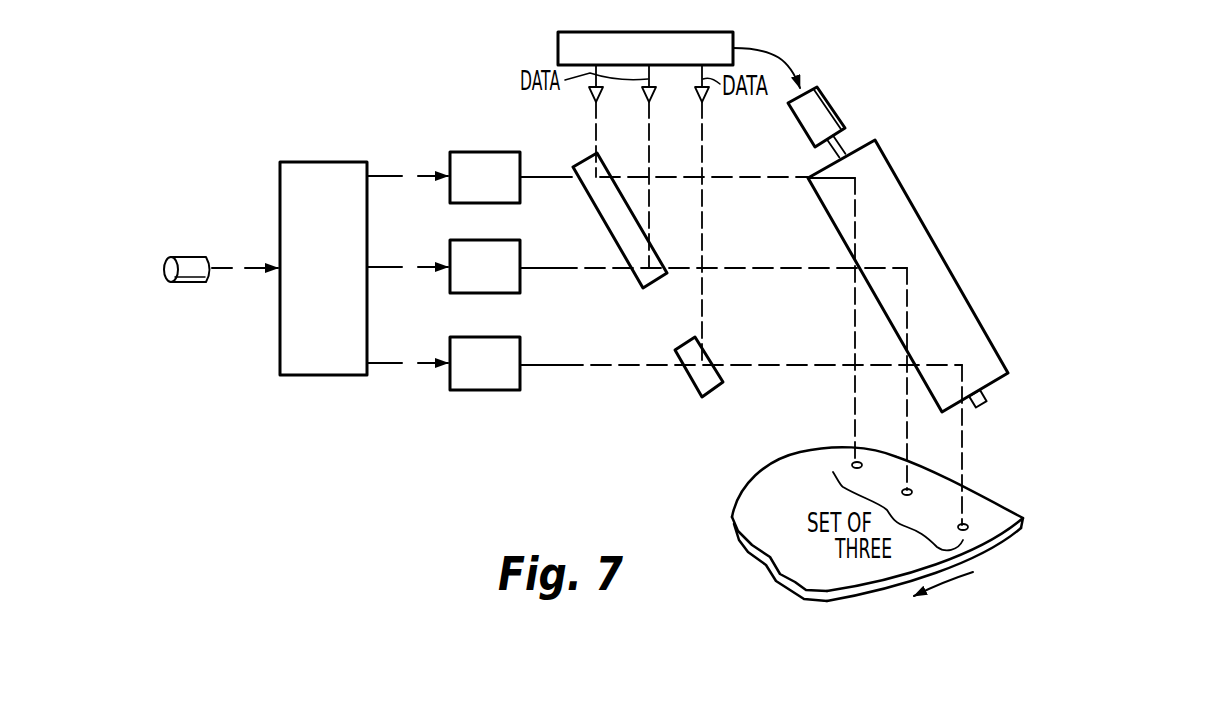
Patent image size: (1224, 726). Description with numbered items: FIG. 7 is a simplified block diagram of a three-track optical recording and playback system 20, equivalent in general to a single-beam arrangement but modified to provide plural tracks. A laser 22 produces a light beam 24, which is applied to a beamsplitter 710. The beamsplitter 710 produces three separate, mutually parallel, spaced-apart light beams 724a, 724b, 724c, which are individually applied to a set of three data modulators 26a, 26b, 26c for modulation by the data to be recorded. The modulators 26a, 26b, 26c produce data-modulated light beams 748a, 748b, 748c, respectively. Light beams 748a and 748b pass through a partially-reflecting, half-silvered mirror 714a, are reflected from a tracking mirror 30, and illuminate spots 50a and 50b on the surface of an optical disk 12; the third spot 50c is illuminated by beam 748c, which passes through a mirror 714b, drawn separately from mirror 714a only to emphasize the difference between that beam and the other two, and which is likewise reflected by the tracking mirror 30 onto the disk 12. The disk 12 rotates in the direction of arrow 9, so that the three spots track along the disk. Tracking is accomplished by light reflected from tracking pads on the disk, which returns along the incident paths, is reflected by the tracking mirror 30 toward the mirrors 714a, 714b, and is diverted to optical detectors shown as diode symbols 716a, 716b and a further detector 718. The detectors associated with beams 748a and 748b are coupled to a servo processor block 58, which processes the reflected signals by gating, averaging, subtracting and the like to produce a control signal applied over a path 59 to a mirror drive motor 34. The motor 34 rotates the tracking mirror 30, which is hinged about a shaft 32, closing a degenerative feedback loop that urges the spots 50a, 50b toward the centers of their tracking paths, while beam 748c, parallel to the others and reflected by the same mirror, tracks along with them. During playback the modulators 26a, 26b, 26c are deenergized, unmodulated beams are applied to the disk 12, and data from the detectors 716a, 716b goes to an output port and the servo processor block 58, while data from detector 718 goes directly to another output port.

The optical recording system 20 is at (450, 78).
The laser 22 is at (184, 257).
The light beam 24 is at (239, 265).
The beamsplitter 710 is at (318, 162).
The light beam 724a is at (413, 175).
The light beam 724b is at (411, 266).
The light beam 724c is at (411, 362).
The data modulator 26a is at (483, 151).
The data modulator 26b is at (521, 244).
The data modulator 26c is at (490, 391).
The data-modulated light beam 748a is at (567, 180).
The data-modulated light beam 748b is at (578, 270).
The data-modulated light beam 748c is at (586, 368).
The partially-reflecting mirror 714a is at (655, 291).
The mirror 714b is at (712, 398).
The optical detector 716a is at (590, 97).
The optical detector 716b is at (656, 96).
The detector 718 is at (711, 96).
The servo processor block 58 is at (558, 47).
The path 59 is at (782, 63).
The mirror drive motor 34 is at (829, 97).
The shaft 32 is at (852, 137).
The tracking mirror 30 is at (899, 171).
The optical disk 12 is at (732, 517).
The spot 50a is at (852, 465).
The spot 50b is at (910, 489).
The recording spot 50c is at (967, 526).
The arrow 9 is at (957, 575).